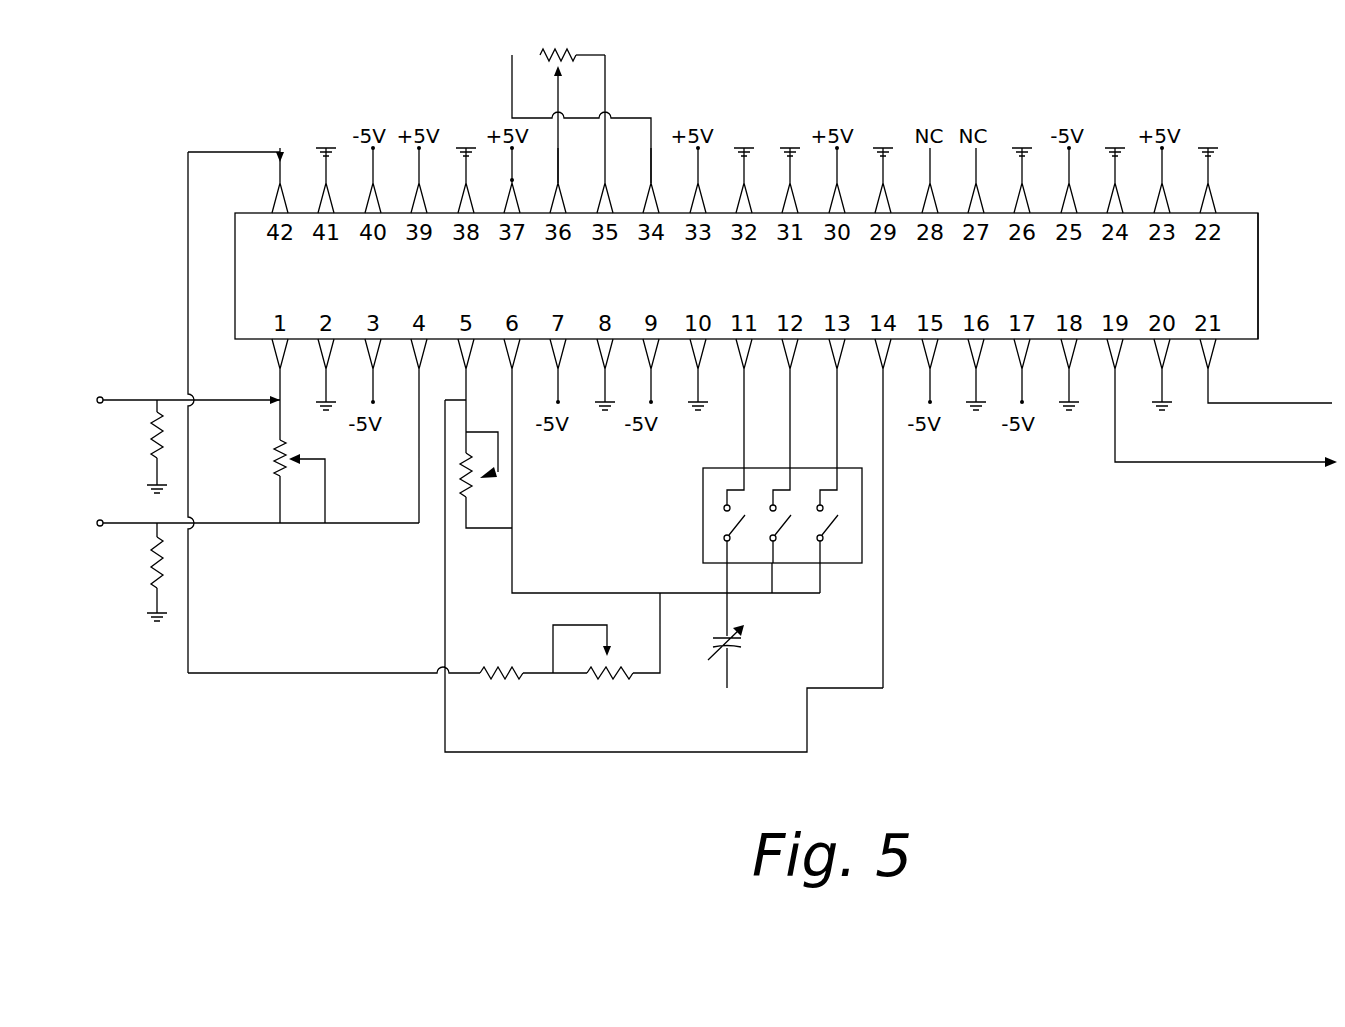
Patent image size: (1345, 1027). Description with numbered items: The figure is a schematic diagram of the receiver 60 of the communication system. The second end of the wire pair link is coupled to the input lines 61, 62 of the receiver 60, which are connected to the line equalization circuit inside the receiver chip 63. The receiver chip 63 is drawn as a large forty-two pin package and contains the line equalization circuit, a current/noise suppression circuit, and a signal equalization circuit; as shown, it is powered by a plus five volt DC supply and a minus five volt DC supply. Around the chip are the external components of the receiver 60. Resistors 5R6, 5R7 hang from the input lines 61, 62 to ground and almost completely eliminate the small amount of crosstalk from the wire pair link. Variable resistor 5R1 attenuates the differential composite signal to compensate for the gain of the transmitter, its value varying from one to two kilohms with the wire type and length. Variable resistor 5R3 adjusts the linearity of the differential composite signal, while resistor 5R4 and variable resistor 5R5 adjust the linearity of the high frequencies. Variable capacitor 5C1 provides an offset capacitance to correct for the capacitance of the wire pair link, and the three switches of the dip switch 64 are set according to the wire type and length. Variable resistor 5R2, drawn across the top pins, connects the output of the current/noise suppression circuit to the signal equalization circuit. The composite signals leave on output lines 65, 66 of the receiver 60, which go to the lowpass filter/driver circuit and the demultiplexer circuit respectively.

The receiver 60 is at (837, 97).
The input line 61 is at (118, 398).
The input line 62 is at (114, 521).
The receiver chip 63 is at (1258, 258).
The dip switch 64 is at (703, 498).
The output line 65 is at (1272, 403).
The output line 66 is at (1258, 462).
The variable resistor 5R1 is at (321, 462).
The variable resistor 5R2 is at (581, 105).
The variable resistor 5R3 is at (632, 496).
The resistor 5R4 is at (535, 576).
The variable resistor 5R5 is at (606, 650).
The resistor 5R6 is at (130, 446).
The resistor 5R7 is at (134, 572).
The variable capacitor 5C1 is at (750, 656).